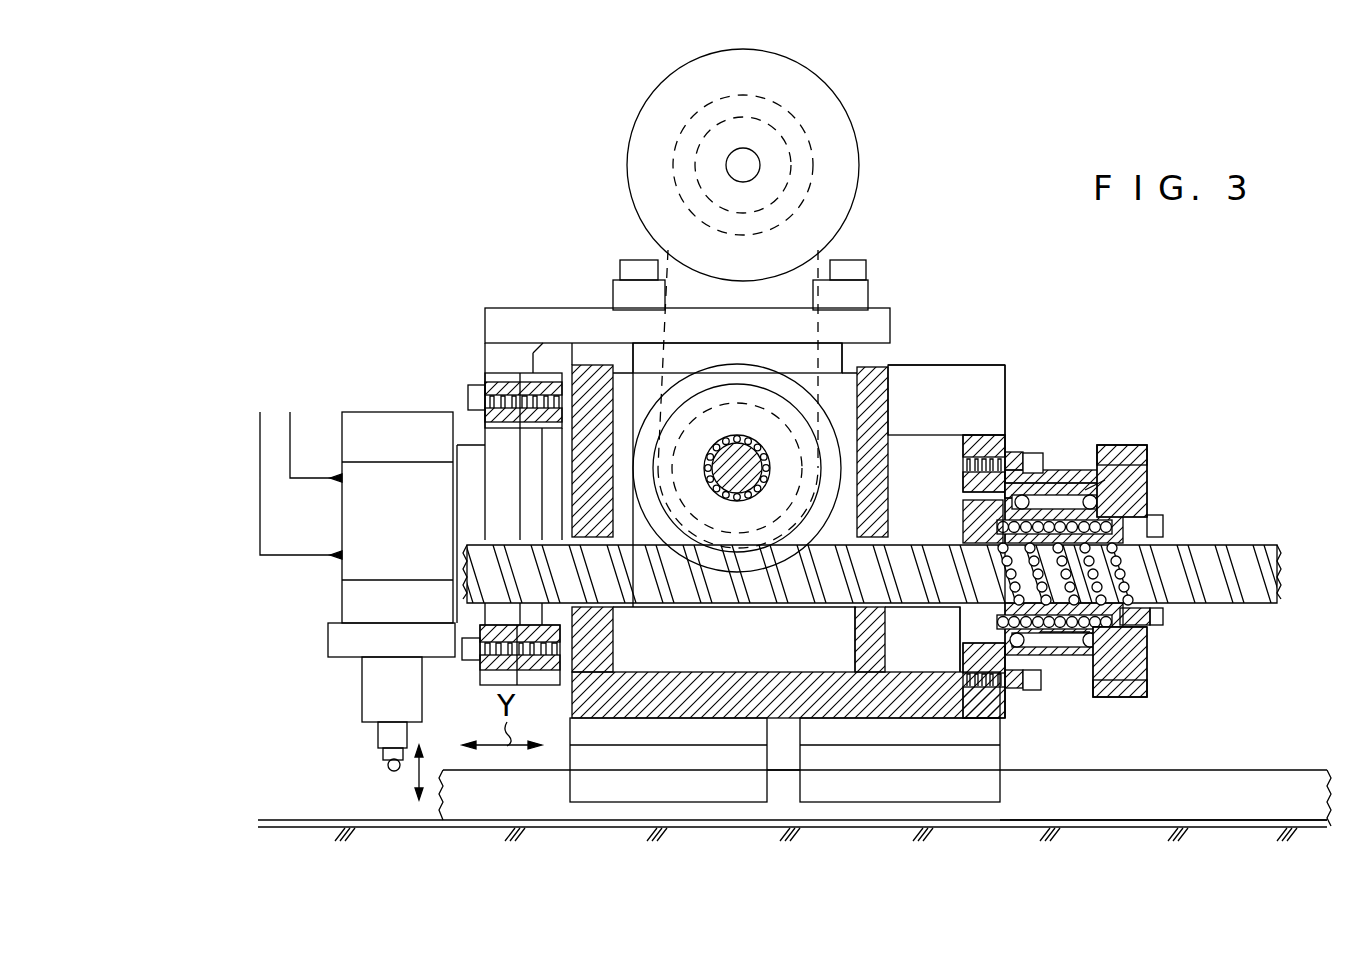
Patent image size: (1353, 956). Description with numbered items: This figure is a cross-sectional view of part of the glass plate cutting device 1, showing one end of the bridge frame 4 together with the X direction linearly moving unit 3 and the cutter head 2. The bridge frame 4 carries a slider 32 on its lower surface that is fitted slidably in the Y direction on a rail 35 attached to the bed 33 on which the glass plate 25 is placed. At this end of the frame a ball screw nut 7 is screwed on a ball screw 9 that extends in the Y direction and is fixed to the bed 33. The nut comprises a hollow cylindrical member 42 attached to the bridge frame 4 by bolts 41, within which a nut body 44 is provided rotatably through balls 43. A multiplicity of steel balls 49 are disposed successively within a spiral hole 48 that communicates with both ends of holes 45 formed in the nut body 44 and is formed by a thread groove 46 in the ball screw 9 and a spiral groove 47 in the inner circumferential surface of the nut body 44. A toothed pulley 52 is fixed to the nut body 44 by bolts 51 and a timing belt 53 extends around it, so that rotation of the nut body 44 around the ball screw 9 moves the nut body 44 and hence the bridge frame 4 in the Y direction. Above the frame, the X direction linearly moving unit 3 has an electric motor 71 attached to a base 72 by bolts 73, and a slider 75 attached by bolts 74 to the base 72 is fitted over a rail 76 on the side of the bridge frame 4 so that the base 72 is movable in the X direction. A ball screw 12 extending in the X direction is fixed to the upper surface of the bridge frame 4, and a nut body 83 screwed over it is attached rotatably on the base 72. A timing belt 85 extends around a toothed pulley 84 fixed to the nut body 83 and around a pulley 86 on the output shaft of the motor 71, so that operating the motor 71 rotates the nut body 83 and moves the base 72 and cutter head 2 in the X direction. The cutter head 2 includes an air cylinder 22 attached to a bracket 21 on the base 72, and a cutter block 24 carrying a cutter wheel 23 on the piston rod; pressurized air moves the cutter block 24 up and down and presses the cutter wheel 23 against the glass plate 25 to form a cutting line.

The glass plate cutting device 1 is at (954, 283).
The cutter head 2 is at (366, 410).
The X direction linearly moving unit 3 is at (858, 142).
The bridge frame 4 is at (976, 364).
The ball screw nut 7 is at (1057, 466).
The ball screw 9 is at (1204, 546).
The ball screw 12 is at (760, 460).
The bracket 21 is at (328, 644).
The air cylinder 22 is at (404, 424).
The cutter wheel 23 is at (390, 764).
The cutter block 24 is at (378, 738).
The glass plate 25 is at (302, 820).
The slider 32 is at (570, 798).
The bed 33 is at (1266, 834).
The rail 35 is at (1240, 774).
The bolts 41 is at (1006, 435).
The hollow cylindrical member 42 is at (1050, 500).
The balls 43 is at (1014, 452).
The nut body 44 is at (1140, 662).
The holes 45 is at (1048, 480).
The thread groove 46 is at (1167, 587).
The spiral groove 47 is at (985, 532).
The spiral hole 48 is at (1110, 496).
The steel balls 49 is at (1059, 640).
The bolts 51 is at (1163, 524).
The toothed pulley 52 is at (1140, 684).
The timing belt 53 is at (1140, 450).
The electric motor 71 is at (816, 90).
The base 72 is at (542, 308).
The bolts 73 is at (632, 262).
The bolts 74 is at (474, 388).
The slider 75 is at (523, 374).
The rail 76 is at (546, 476).
The nut body 83 is at (815, 366).
The toothed pulley 84 is at (820, 474).
The timing belt 85 is at (814, 210).
The pulley 86 is at (822, 126).